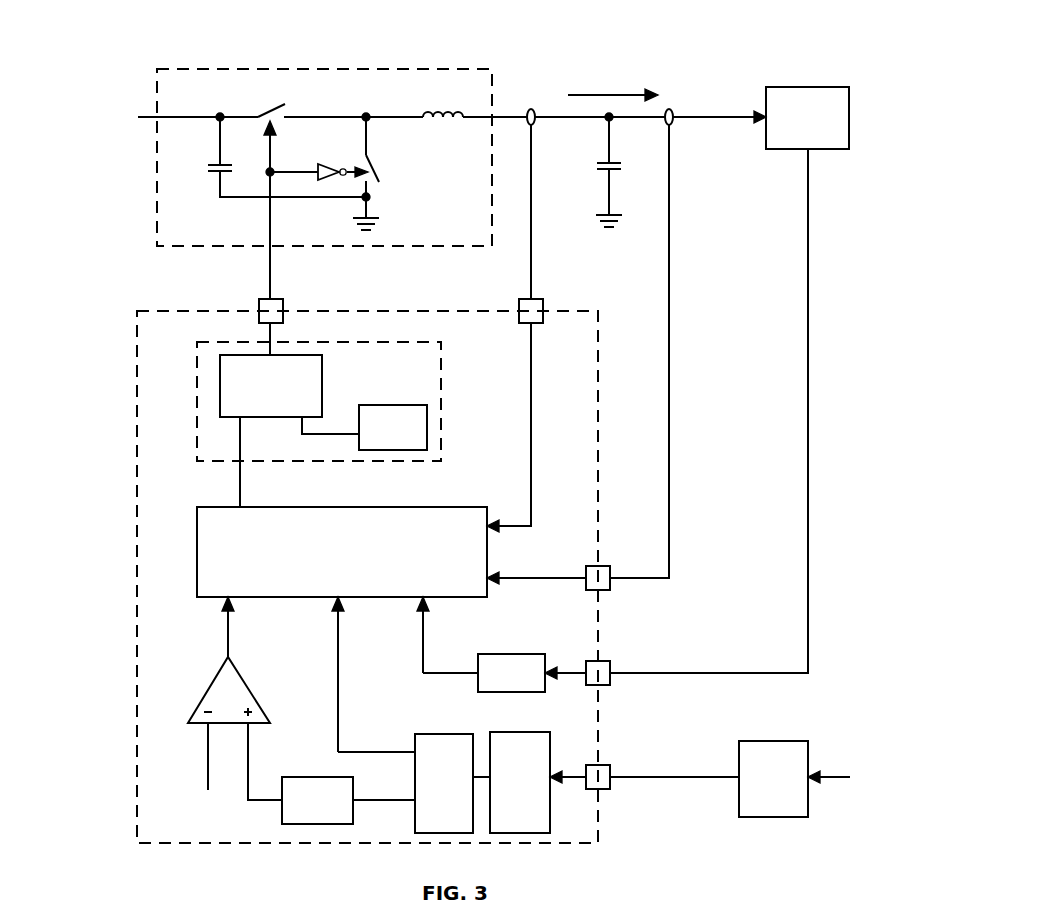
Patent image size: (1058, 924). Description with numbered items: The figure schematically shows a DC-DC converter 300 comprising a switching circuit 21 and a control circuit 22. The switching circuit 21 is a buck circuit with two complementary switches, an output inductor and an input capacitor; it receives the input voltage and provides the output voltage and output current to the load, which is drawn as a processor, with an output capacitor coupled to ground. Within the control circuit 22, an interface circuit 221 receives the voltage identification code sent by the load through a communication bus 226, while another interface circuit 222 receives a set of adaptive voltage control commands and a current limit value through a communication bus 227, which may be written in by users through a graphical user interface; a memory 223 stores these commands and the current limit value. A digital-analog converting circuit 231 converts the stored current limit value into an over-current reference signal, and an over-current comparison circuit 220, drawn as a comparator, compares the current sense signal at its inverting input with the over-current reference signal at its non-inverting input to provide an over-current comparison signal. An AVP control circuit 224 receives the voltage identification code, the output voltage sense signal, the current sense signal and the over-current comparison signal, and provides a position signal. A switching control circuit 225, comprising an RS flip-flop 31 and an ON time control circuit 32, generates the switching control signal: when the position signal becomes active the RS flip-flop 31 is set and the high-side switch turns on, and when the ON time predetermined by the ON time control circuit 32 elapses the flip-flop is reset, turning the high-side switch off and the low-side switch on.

The DC-DC converter 300 is at (128, 58).
The switching circuit 21 is at (465, 69).
The control circuit 22 is at (468, 311).
The switching control circuit 225 is at (441, 393).
The RS flip-flop 31 is at (322, 399).
The ON time control circuit 32 is at (372, 405).
The AVP control circuit 224 is at (455, 507).
The over-current comparison circuit 220 is at (255, 690).
The digital-analog converting circuit 231 is at (322, 777).
The interface circuit 221 is at (511, 673).
The interface circuit 222 is at (520, 782).
The memory 223 is at (444, 783).
The communication bus 226 is at (808, 530).
The communication bus 227 is at (684, 778).